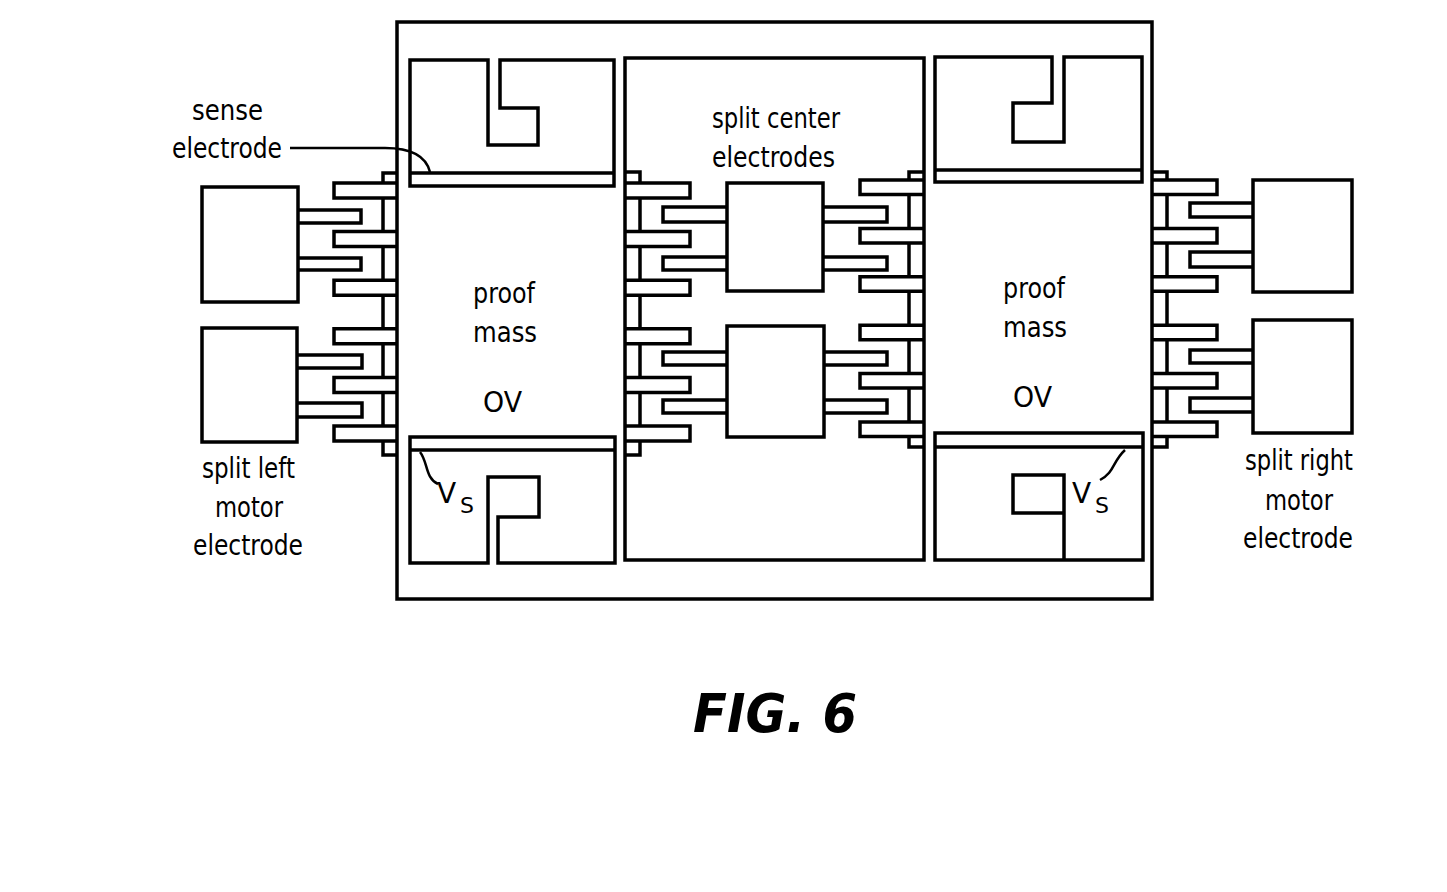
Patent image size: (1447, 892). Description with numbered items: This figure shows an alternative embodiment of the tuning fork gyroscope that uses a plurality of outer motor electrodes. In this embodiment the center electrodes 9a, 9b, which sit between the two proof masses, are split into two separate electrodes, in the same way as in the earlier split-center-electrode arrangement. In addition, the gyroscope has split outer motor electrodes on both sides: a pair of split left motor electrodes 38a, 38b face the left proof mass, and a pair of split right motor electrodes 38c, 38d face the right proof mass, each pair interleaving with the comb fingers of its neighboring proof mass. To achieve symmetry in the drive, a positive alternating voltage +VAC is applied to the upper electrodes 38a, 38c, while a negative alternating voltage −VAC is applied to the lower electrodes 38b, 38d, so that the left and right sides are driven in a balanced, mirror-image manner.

The split left motor electrode 38a is at (201, 268).
The split left motor electrode 38b is at (201, 406).
The split right motor electrode 38c is at (1354, 224).
The split right motor electrode 38d is at (1354, 353).
The center electrode 9a is at (802, 437).
The center electrode 9b is at (823, 185).